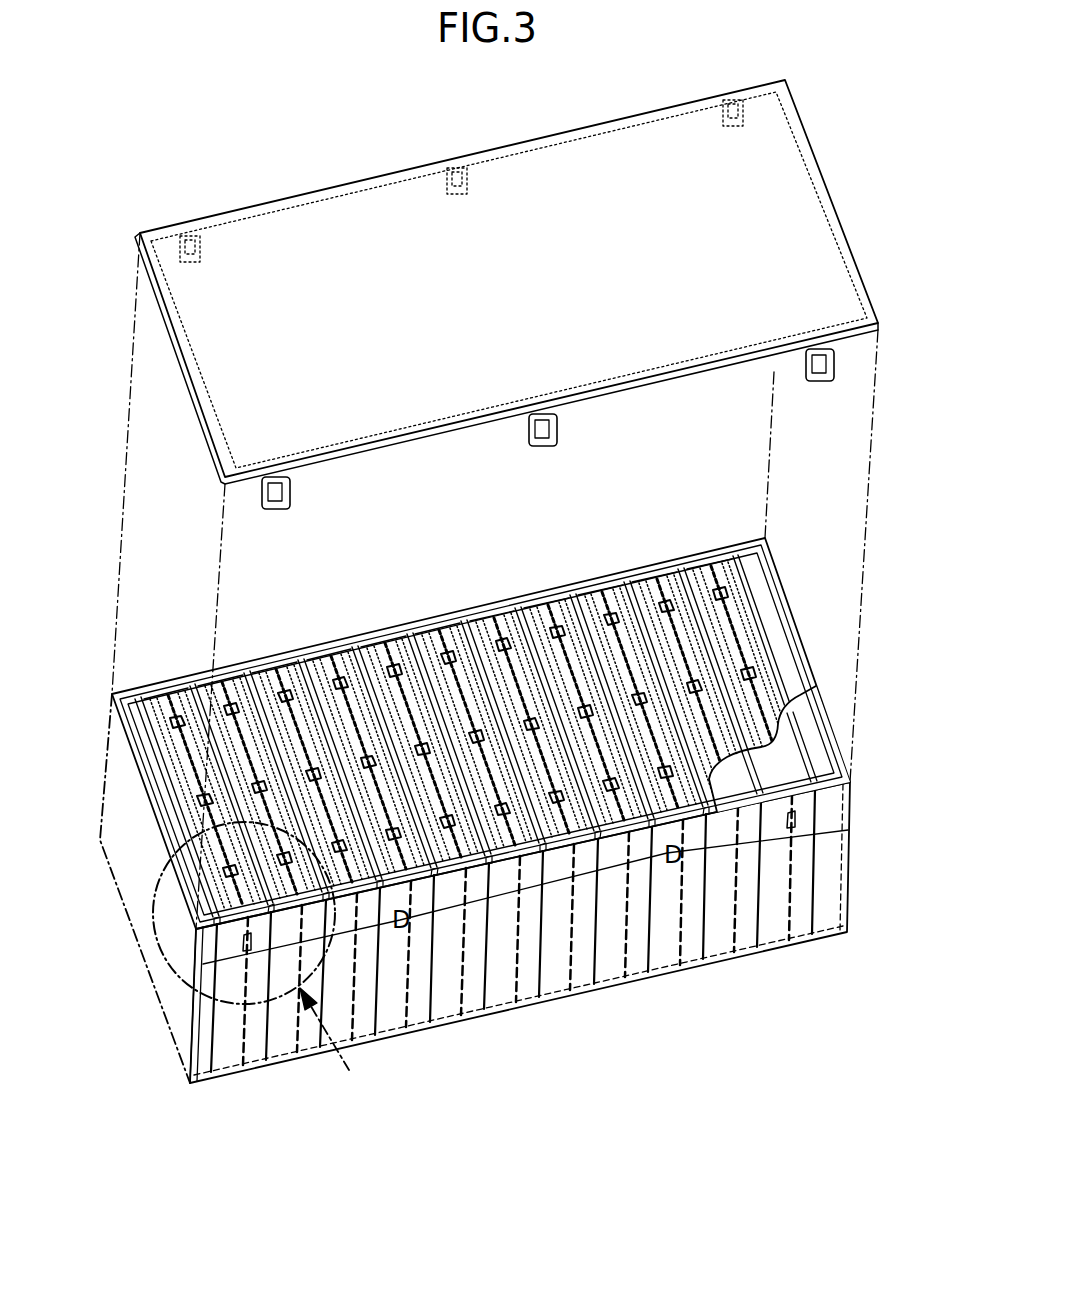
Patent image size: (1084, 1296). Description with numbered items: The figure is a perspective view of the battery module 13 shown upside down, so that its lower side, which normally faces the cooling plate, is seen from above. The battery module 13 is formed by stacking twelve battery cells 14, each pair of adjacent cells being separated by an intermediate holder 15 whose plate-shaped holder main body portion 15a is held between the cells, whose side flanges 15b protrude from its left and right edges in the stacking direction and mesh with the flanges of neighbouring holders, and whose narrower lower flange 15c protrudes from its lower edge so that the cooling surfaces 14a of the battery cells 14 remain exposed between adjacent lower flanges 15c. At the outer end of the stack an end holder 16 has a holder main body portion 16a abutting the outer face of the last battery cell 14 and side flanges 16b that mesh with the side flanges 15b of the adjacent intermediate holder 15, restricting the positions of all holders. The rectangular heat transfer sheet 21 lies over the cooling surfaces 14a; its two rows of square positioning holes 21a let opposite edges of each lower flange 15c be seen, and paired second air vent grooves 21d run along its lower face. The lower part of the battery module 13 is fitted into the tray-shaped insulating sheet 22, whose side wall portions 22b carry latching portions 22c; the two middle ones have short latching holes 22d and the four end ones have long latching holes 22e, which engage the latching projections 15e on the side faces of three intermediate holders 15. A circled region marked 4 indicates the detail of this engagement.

The insulating sheet 22 is at (560, 125).
The side wall portions 22b is at (366, 185).
The latching portions 22c is at (210, 250).
The latching holes 22d is at (460, 200).
The latching holes 22e is at (196, 262).
The battery module 13 is at (663, 545).
The heat transfer sheet 21 is at (425, 615).
The positioning holes 21a is at (662, 606).
The second air vent grooves 21d is at (724, 545).
The intermediate holder 15 is at (513, 955).
The holder main body portion 15a is at (448, 1012).
The side flanges 15b is at (410, 1025).
The lower flange 15c is at (547, 585).
The latching projections 15e is at (242, 950).
The end holder 16 is at (493, 921).
The holder main body portion 16a is at (135, 900).
The side flanges 16b is at (207, 1050).
The battery cell 14 is at (802, 722).
The cooling surface 14a is at (824, 770).
The detail region of FIG. 4 is at (258, 961).